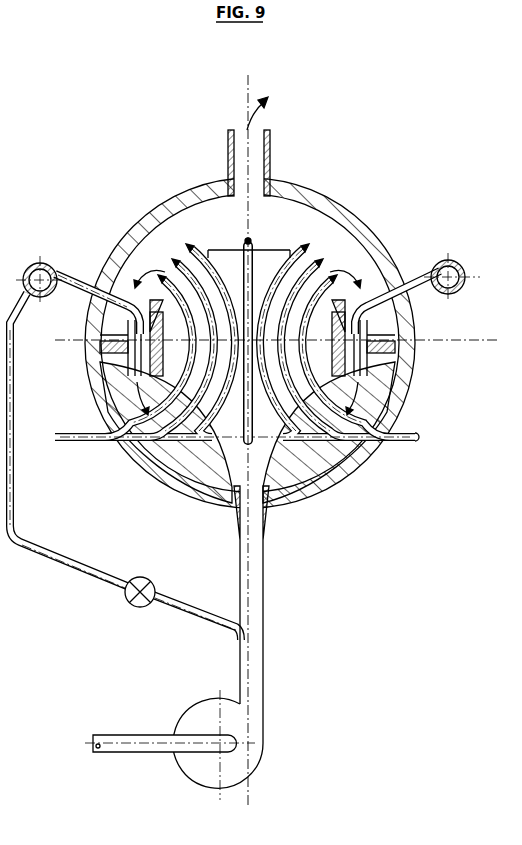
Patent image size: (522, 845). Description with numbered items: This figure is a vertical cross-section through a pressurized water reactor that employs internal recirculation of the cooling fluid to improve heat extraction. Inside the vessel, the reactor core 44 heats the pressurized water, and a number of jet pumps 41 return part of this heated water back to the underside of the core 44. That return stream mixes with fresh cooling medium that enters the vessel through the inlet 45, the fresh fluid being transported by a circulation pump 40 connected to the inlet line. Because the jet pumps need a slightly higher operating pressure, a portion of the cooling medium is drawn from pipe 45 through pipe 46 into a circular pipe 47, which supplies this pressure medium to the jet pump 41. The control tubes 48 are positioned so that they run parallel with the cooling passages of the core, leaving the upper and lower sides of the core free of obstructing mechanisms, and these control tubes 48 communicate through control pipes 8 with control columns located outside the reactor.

The control pipe 8 is at (388, 442).
The circulation pump 40 is at (180, 720).
The jet pump 41 is at (132, 312).
The core 44 is at (268, 250).
The inlet 45 is at (240, 648).
The pipe 46 is at (118, 585).
The circular pipe 47 is at (80, 267).
The control tube 48 is at (245, 243).